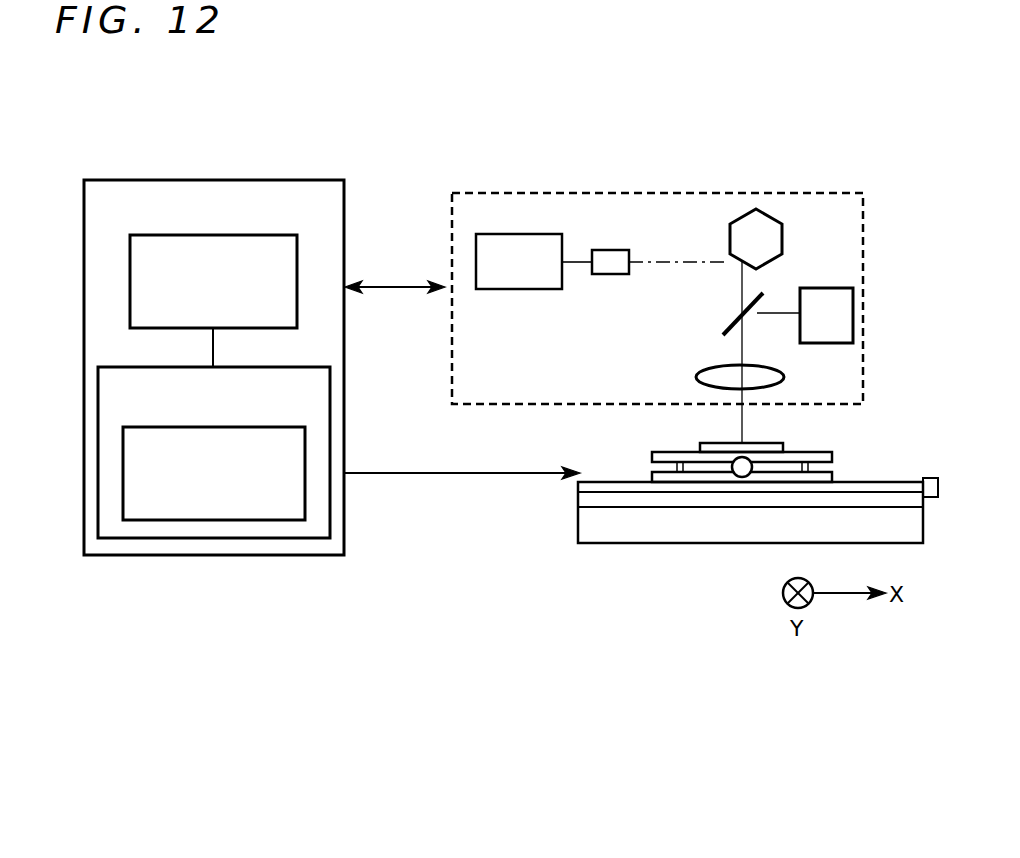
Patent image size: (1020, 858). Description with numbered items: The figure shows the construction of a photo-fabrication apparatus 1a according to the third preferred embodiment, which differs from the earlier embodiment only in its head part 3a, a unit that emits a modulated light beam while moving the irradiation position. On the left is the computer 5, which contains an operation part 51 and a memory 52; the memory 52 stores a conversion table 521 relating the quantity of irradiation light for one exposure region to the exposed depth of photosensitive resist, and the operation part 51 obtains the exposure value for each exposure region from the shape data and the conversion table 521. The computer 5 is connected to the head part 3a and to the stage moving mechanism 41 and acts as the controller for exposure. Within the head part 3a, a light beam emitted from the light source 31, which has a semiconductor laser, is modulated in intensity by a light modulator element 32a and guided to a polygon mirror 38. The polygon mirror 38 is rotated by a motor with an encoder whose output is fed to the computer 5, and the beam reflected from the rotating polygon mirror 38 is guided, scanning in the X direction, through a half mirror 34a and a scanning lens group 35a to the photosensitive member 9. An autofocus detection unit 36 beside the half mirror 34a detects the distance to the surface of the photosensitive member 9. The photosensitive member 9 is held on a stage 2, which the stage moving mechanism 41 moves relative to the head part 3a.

The photo-fabrication apparatus 1a is at (207, 131).
The computer 5 is at (212, 180).
The operation part 51 is at (297, 272).
The memory 52 is at (245, 540).
The conversion table 521 is at (305, 483).
The head part 3a is at (712, 190).
The light source 31 is at (512, 234).
The light modulator element 32a is at (604, 250).
The polygon mirror 38 is at (763, 233).
The half mirror 34a is at (757, 307).
The autofocus detection unit 36 is at (853, 300).
The scanning lens group 35a is at (763, 377).
The stage moving mechanism 41 is at (850, 478).
The stage 2 is at (685, 452).
The photosensitive member 9 is at (757, 443).